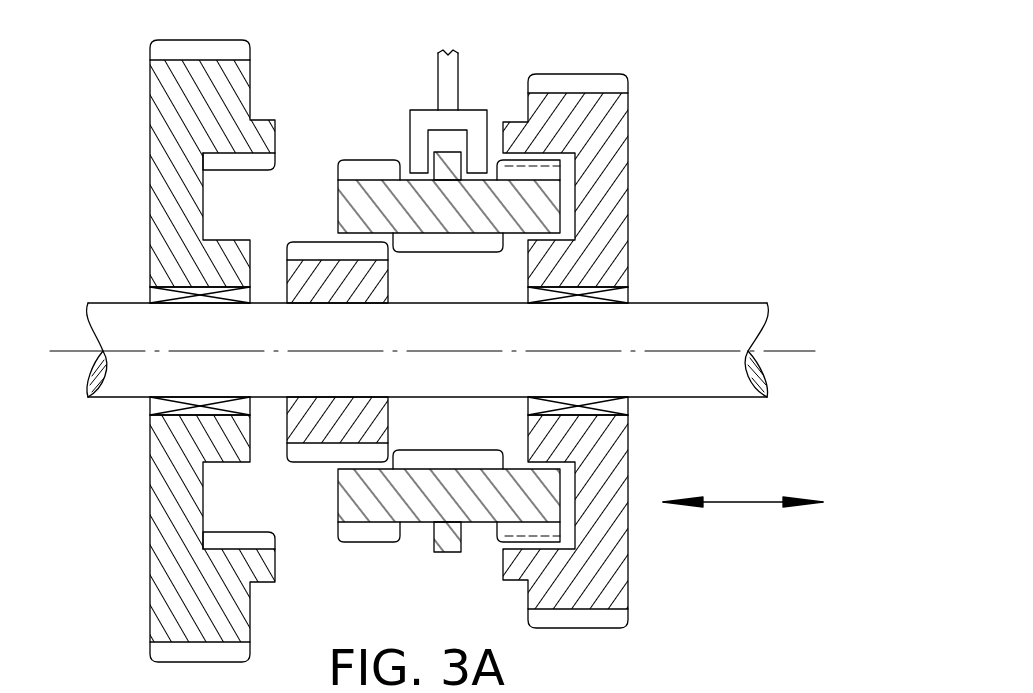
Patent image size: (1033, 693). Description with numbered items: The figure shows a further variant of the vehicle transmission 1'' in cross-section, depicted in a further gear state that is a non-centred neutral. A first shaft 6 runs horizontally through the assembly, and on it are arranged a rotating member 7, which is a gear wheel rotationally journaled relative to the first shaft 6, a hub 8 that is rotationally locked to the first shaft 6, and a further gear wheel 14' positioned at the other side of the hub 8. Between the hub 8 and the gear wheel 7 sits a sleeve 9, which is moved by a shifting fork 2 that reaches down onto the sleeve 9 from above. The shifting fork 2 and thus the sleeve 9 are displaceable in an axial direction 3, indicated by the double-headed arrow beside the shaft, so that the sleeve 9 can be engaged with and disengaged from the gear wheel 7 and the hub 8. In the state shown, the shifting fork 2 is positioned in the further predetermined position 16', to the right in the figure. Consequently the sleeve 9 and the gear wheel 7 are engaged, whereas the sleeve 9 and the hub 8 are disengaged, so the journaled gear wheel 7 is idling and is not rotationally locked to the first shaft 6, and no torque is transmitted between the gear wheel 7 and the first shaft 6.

The vehicle transmission 1'' is at (436, 336).
The shifting fork 2 is at (448, 86).
The axial direction 3 is at (742, 500).
The first shaft 6 is at (118, 332).
The rotating member 7 is at (590, 245).
The hub 8 is at (310, 283).
The sleeve 9 is at (523, 212).
The further gear wheel 14' is at (169, 351).
The further predetermined position 16' is at (490, 91).